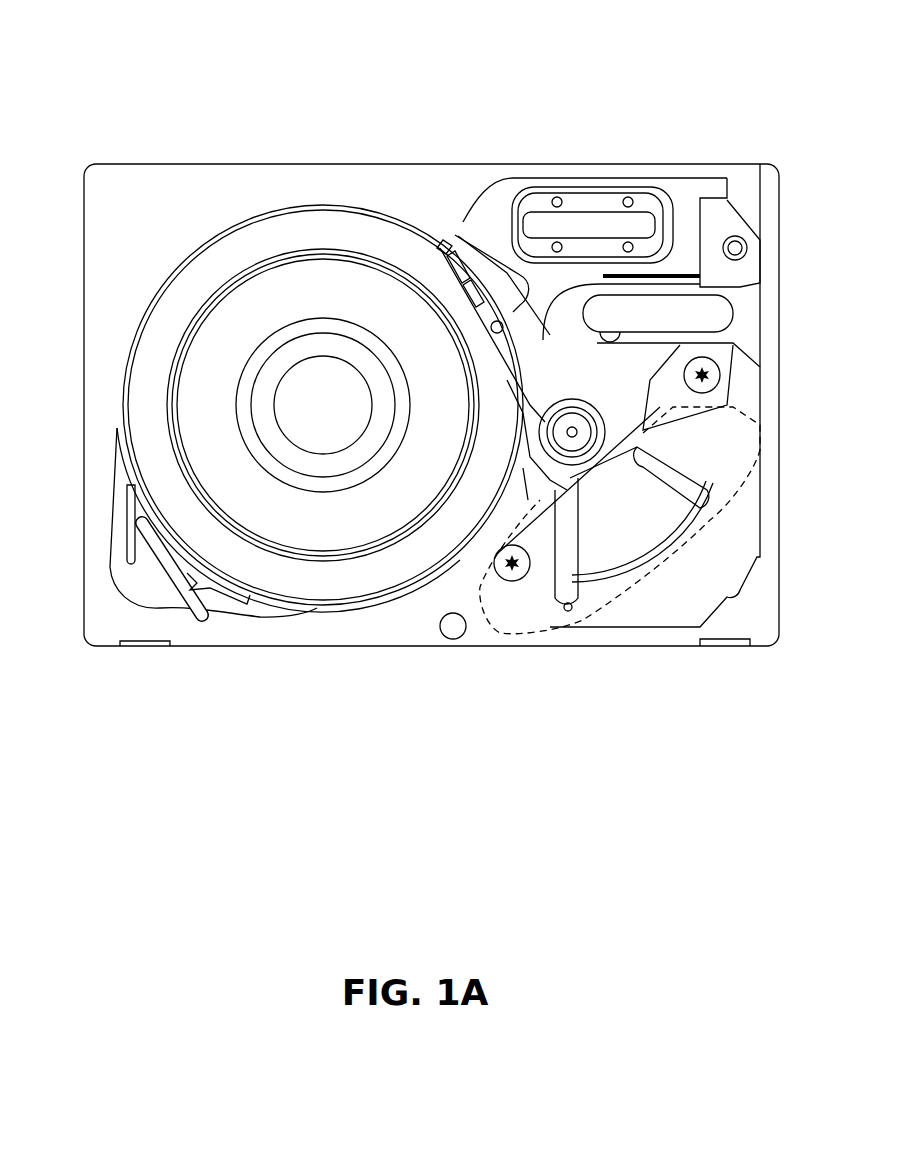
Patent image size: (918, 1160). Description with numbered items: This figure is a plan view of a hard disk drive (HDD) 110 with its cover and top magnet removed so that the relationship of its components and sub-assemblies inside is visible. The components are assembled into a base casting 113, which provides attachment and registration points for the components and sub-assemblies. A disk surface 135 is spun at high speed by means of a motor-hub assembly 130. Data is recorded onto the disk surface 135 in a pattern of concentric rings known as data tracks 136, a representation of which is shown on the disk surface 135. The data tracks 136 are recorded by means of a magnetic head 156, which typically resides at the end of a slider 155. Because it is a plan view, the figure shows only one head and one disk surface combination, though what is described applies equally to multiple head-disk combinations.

The hard disk drive 110 is at (160, 108).
The base casting 113 is at (105, 368).
The motor-hub assembly 130 is at (325, 403).
The disk surface 135 is at (258, 247).
The data tracks 136 is at (170, 458).
The slider 155 is at (443, 250).
The magnetic head 156 is at (435, 247).